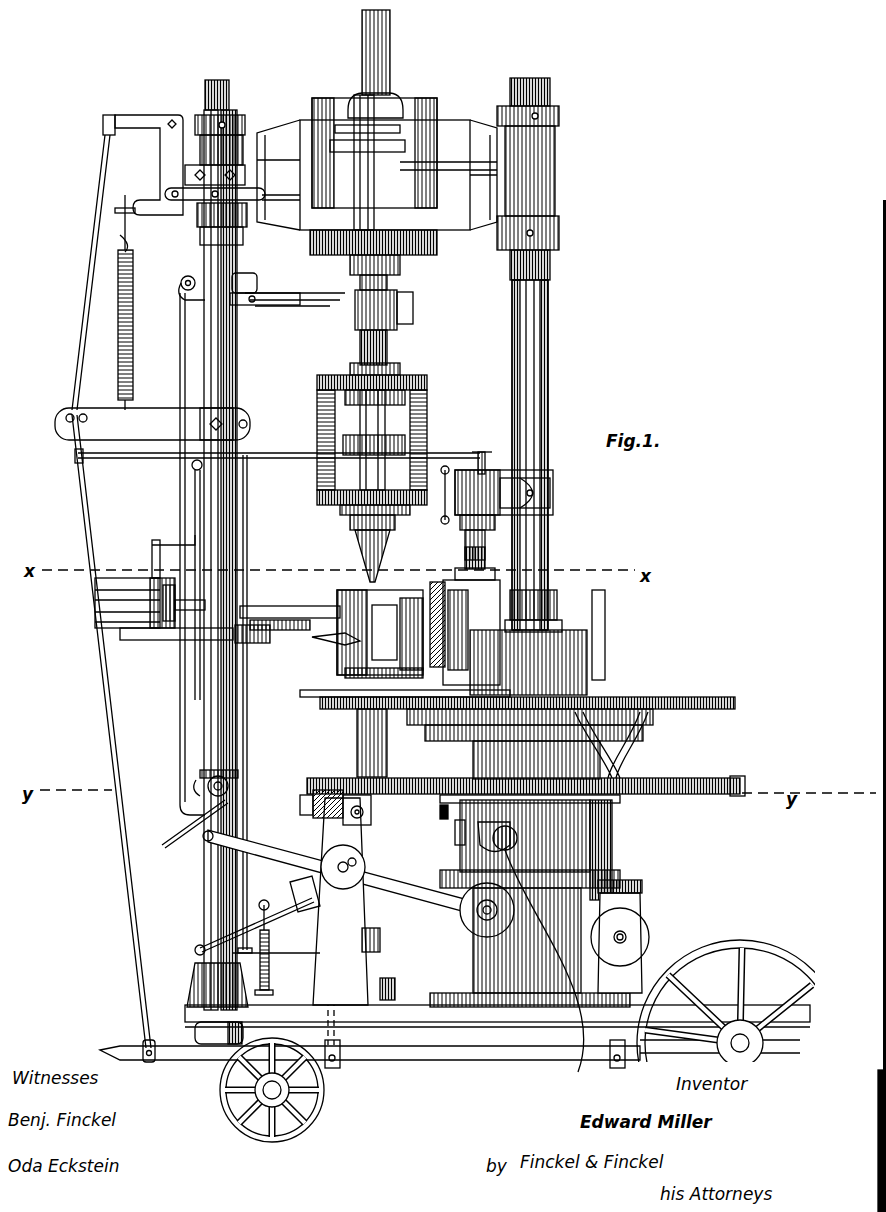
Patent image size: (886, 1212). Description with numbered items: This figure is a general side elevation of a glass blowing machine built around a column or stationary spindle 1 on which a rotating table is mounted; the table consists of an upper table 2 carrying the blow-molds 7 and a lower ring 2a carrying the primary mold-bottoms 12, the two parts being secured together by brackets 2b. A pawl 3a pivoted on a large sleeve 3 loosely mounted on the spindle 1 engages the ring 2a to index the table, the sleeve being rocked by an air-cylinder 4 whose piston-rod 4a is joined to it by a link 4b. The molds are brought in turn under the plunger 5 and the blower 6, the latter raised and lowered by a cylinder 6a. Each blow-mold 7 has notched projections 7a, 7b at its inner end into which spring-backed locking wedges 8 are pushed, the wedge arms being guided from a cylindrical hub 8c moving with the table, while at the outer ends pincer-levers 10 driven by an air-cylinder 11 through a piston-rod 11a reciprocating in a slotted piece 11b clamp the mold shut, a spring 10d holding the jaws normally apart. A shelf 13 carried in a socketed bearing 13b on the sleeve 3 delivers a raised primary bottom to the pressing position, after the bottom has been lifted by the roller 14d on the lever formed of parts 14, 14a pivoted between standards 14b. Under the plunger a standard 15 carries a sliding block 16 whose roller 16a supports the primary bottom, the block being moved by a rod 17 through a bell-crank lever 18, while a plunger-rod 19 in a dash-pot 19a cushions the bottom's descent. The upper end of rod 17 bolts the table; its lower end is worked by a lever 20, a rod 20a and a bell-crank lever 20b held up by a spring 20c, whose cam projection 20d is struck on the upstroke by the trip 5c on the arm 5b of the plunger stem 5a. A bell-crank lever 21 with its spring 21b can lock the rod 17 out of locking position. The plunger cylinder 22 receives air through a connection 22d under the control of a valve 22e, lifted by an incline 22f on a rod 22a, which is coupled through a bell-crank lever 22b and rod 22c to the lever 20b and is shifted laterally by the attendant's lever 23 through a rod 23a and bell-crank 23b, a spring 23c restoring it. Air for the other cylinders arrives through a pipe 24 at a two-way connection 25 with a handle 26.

The column or stationary spindle 1 is at (540, 580).
The table 2 is at (602, 700).
The ring 2a is at (742, 790).
The brackets 2b is at (616, 762).
The sleeve 3 is at (460, 833).
The pawl 3a is at (612, 808).
The air-cylinder 4 is at (630, 935).
The piston-rod 4a is at (626, 938).
The link 4b is at (622, 893).
The plunger 5 is at (355, 545).
The piston-rod 5a is at (398, 302).
The horizontal arm 5b is at (306, 312).
The trip 5c is at (250, 285).
The blower 6 is at (455, 578).
The cylinder 6a is at (478, 455).
The blow-molds 7 is at (340, 656).
The notched projection 7a is at (467, 610).
The notched projection 7b is at (572, 580).
The locking wedges or keys 8 is at (438, 598).
The cylindrical hub 8c is at (560, 660).
The pincer-levers 10 is at (256, 606).
The spring 10d is at (268, 645).
The air-cylinder 11 is at (123, 580).
The piston-rod 11a is at (200, 604).
The slotted piece 11b is at (150, 640).
The primary mold-bottom 12 is at (358, 750).
The shelf or bracket 13 is at (485, 826).
The socketed bearing 13b is at (578, 1068).
The lever part 14 is at (392, 878).
The lever part 14a is at (270, 850).
The standards 14b is at (343, 946).
The roller 14d is at (472, 925).
The standard 15 is at (215, 975).
The block 16 is at (455, 833).
The roller 16a is at (440, 812).
The rod 17 is at (352, 818).
The bell-crank lever 18 is at (292, 902).
The plunger-rod 19 is at (380, 942).
The dash-pot 19a is at (395, 990).
The lever 20 is at (440, 1060).
The rod 20a is at (135, 935).
The bell-crank lever 20b is at (110, 420).
The spring 20c is at (118, 345).
The cam projection 20d is at (184, 286).
The bell-crank lever 21 is at (200, 952).
The spring 21b is at (315, 800).
The air-cylinder 22 is at (437, 236).
The rod 22a is at (190, 195).
The bell-crank lever 22b is at (130, 122).
The rod 22c is at (90, 282).
The pipe and connection 22d is at (462, 167).
The valve 22e is at (328, 195).
The incline or cam 22f is at (342, 256).
The lever 23 is at (218, 514).
The rod 23a is at (264, 190).
The bell-crank 23b is at (555, 237).
The spring 23c is at (557, 212).
The pipe 24 is at (170, 835).
The two-way connection 25 is at (228, 782).
The handle 26 is at (208, 770).